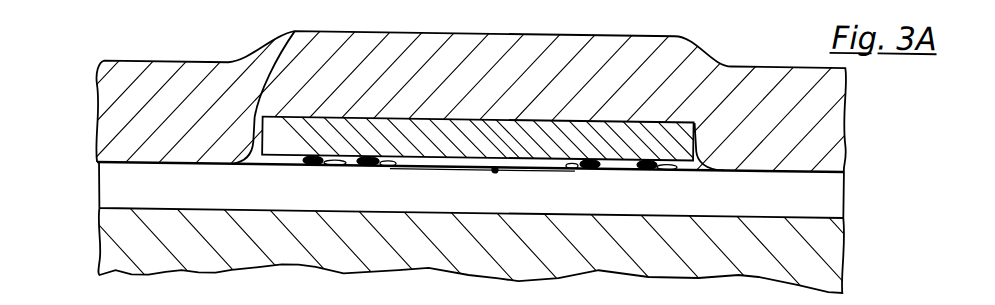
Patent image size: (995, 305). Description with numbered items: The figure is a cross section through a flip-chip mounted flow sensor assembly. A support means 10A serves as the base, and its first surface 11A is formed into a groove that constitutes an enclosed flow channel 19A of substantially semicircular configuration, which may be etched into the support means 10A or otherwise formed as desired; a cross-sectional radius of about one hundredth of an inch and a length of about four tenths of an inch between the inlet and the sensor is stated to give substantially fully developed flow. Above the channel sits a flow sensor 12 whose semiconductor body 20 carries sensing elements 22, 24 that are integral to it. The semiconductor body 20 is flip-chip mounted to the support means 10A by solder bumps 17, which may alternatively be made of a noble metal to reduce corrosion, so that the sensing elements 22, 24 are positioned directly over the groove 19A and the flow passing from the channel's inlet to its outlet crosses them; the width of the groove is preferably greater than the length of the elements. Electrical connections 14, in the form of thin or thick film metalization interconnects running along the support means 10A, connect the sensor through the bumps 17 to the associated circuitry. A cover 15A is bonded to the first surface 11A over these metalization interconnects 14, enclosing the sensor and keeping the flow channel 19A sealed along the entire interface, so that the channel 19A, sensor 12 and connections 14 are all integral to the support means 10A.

The support means 10A is at (130, 247).
The first surface 11A is at (293, 33).
The flow sensor 12 is at (490, 85).
The semiconductor body 20 is at (512, 131).
The electrical connections 14 is at (300, 170).
The cover 15A is at (183, 65).
The solder bumps 17 is at (390, 167).
The flow channel 19A is at (468, 200).
The sensing element 22 is at (493, 183).
The sensing element 24 is at (495, 170).